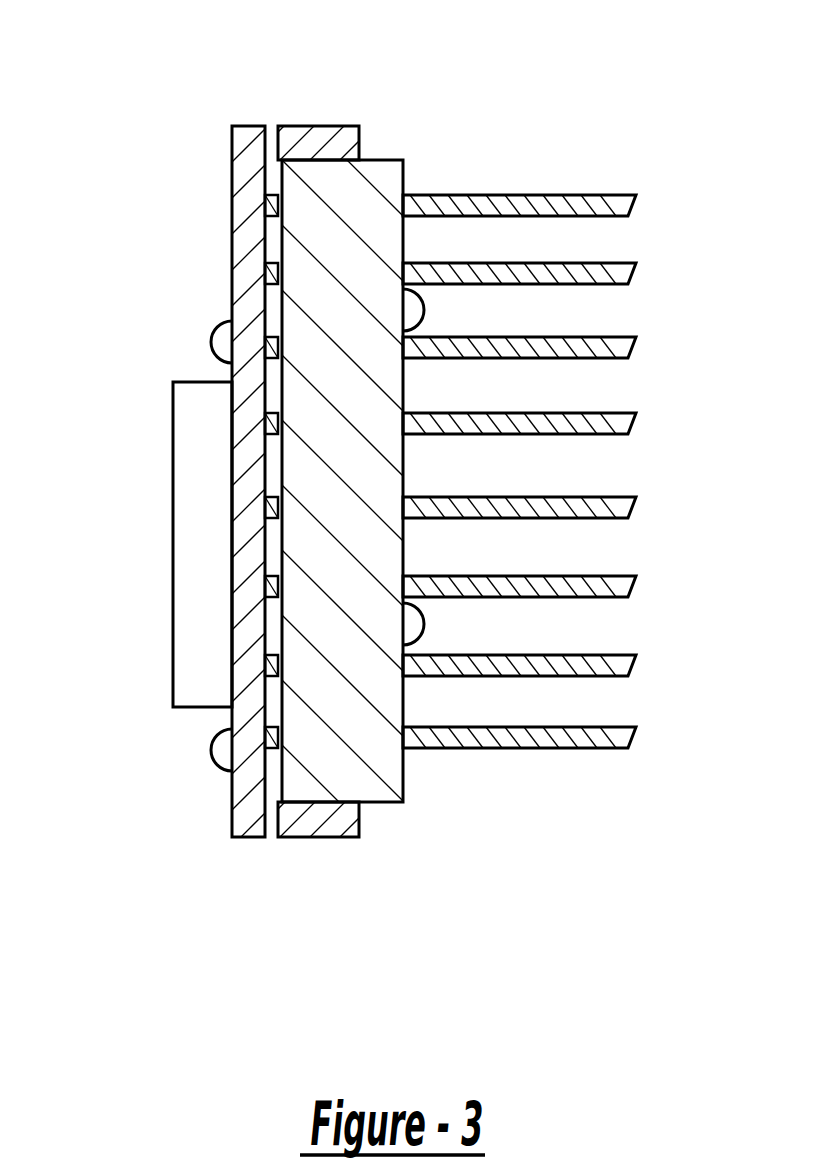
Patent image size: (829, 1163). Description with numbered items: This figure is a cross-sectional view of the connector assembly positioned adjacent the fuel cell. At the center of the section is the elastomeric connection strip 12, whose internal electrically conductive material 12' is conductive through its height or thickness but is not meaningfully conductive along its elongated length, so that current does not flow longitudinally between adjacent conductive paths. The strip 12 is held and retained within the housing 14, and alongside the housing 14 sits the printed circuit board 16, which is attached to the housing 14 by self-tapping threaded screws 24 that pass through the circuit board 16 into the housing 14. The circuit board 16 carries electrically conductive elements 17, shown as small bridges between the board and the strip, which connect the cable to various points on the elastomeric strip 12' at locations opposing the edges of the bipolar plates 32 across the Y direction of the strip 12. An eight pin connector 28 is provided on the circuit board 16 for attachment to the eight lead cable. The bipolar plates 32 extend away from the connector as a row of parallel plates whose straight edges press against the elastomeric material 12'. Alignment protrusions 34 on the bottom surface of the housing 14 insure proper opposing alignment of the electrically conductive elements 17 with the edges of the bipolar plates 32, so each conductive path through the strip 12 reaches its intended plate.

The elastomeric connection strip 12 is at (503, 498).
The internal electrically conductive material 12' is at (376, 456).
The housing 14 is at (315, 143).
The printed circuit board 16 is at (243, 147).
The electrically conductive elements 17 is at (270, 665).
The threaded screws 24 is at (212, 345).
The eight pin connector 28 is at (193, 472).
The bipolar plates 32 is at (630, 340).
The alignment protrusions 34 is at (420, 308).